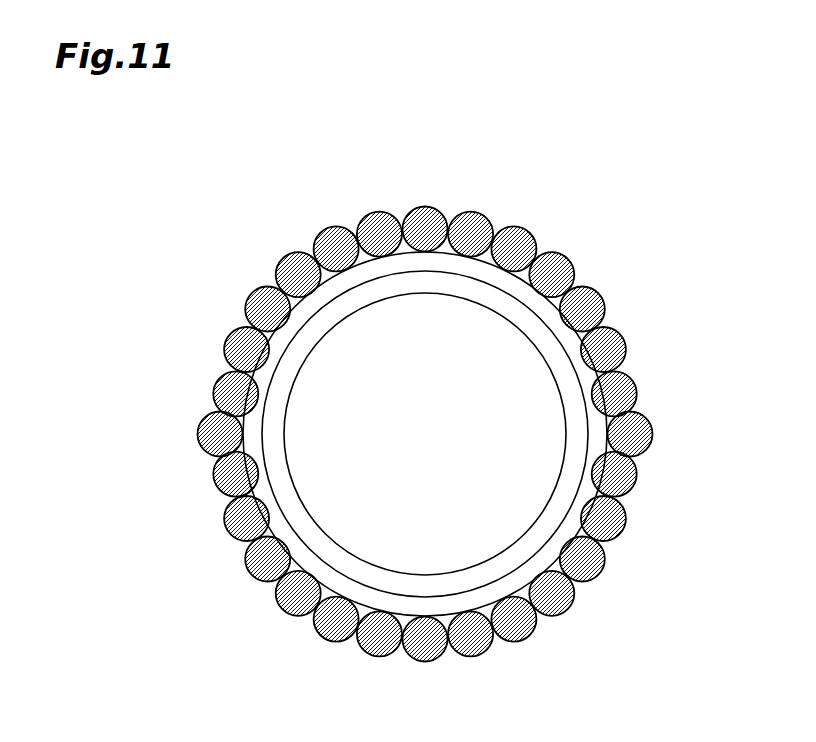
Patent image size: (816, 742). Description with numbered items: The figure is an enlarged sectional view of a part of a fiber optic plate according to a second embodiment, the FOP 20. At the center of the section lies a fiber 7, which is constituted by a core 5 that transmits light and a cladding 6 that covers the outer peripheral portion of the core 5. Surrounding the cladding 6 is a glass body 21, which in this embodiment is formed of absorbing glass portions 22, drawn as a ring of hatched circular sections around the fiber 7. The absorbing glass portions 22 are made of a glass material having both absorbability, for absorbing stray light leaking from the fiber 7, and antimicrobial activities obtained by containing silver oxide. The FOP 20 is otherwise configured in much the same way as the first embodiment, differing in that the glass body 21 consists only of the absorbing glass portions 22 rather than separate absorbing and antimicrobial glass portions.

The FOP 20 is at (612, 110).
The glass body 21 is at (240, 224).
The absorbing glass portions 22 is at (471, 233).
The fiber 7 is at (696, 255).
The core 5 is at (493, 340).
The cladding 6 is at (572, 350).